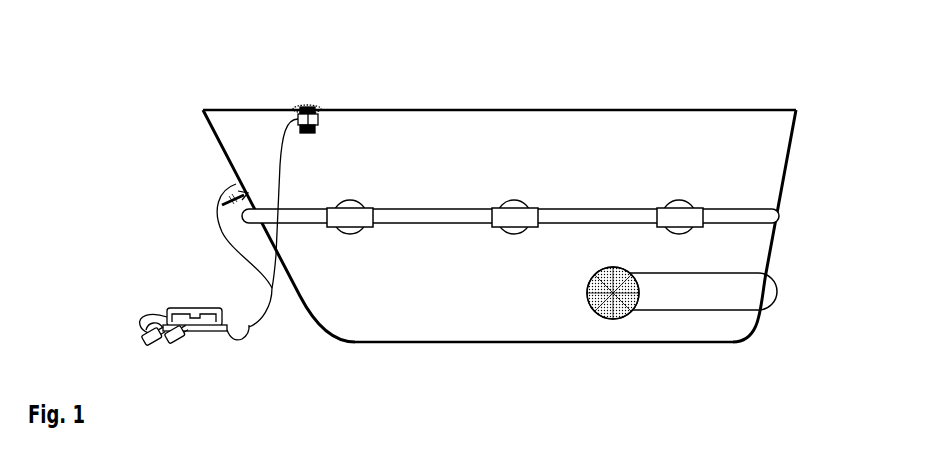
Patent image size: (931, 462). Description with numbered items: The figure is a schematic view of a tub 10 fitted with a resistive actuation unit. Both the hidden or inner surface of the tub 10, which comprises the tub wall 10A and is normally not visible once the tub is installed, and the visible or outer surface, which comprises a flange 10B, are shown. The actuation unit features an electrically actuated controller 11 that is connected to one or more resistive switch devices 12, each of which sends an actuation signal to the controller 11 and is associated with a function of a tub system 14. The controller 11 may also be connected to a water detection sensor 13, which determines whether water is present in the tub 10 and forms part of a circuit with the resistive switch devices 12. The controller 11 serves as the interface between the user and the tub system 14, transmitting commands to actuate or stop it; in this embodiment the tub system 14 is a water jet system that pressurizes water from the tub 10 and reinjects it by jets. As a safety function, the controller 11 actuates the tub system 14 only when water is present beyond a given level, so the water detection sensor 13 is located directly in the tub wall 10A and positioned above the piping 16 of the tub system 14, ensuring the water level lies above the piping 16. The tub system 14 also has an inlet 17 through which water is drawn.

The tub 10 is at (546, 103).
The tub wall 10A is at (298, 305).
The flange 10B is at (790, 103).
The controller 11 is at (190, 307).
The resistive switch device 12 is at (306, 103).
The water detection sensor 13 is at (227, 197).
The tub system 14 is at (586, 228).
The piping 16 is at (437, 206).
The inlet 17 is at (625, 322).